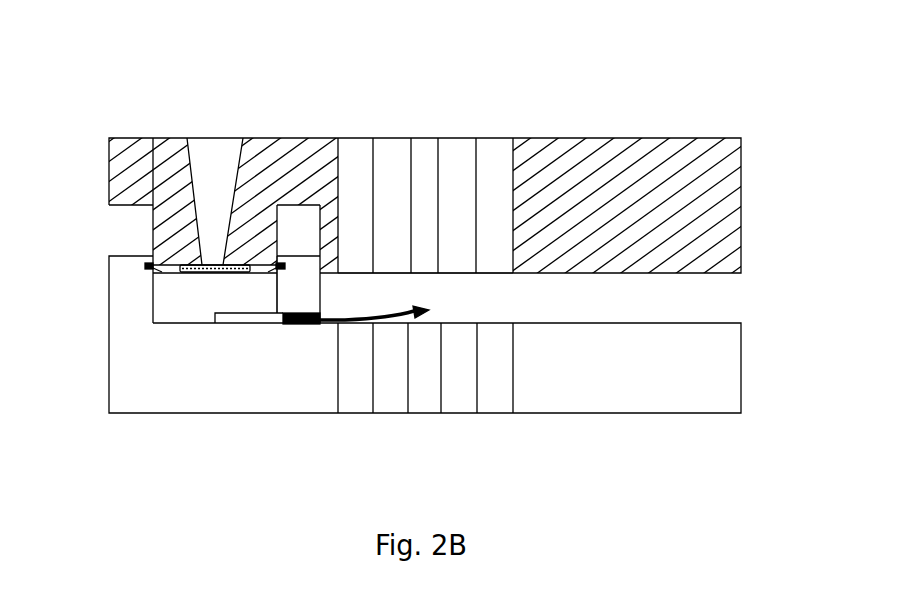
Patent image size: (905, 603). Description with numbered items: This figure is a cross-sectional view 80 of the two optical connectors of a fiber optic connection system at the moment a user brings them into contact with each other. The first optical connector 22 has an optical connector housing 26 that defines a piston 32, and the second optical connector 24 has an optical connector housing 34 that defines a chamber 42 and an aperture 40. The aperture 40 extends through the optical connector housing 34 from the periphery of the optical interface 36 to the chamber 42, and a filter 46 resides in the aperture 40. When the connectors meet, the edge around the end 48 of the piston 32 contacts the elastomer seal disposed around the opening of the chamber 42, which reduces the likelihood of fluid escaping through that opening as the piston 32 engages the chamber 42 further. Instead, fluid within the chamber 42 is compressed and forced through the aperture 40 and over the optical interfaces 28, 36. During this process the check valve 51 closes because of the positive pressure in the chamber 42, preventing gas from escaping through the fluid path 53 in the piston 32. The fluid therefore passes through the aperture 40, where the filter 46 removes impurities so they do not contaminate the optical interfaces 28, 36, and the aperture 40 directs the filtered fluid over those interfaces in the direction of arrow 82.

The cross-sectional view 80 is at (670, 64).
The optical connector 22 is at (753, 112).
The optical connector 24 is at (763, 434).
The optical connector housing 26 is at (732, 234).
The optical connector housing 34 is at (732, 377).
The piston 32 is at (153, 230).
The fluid path 53 is at (220, 157).
The optical interface 36 is at (450, 298).
The optical interface 28 is at (489, 308).
The chamber 42 is at (167, 310).
The aperture 40 is at (291, 354).
The filter 46 is at (309, 345).
The end of the piston 48 is at (266, 273).
The check valve 51 is at (197, 274).
The arrow 82 is at (396, 315).